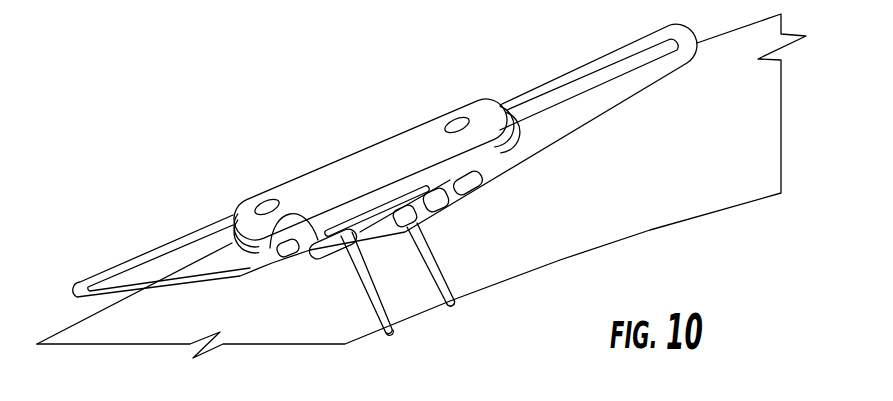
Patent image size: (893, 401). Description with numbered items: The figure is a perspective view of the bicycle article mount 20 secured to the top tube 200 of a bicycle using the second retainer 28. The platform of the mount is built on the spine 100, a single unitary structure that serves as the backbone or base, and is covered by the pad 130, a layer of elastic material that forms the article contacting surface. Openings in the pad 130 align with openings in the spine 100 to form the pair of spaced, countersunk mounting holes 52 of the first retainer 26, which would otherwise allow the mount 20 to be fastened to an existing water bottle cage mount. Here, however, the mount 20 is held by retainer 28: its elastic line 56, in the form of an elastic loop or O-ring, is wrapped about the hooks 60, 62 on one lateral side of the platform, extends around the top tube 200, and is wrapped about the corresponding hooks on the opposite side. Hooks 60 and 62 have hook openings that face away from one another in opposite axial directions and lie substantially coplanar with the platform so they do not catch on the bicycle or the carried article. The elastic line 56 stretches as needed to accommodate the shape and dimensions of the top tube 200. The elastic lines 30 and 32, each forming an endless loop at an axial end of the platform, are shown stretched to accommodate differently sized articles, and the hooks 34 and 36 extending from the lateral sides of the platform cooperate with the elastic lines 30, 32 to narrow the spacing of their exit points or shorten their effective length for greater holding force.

The bicycle article mount 20 is at (243, 183).
The retainer 26 is at (271, 199).
The retainer 28 is at (393, 329).
The elastic line 30 is at (137, 262).
The elastic line 32 is at (557, 82).
The hook 34 is at (368, 245).
The hook 36 is at (409, 226).
The mounting hole 52 is at (455, 120).
The elastic line 56 is at (452, 303).
The hook 60 is at (295, 213).
The hook 62 is at (441, 217).
The spine 100 is at (518, 134).
The pad 130 is at (367, 152).
The top tube 200 is at (730, 189).